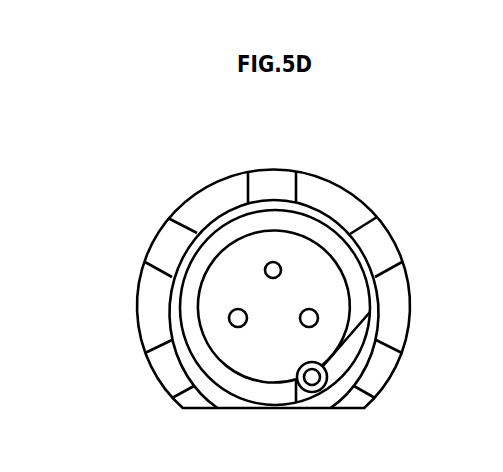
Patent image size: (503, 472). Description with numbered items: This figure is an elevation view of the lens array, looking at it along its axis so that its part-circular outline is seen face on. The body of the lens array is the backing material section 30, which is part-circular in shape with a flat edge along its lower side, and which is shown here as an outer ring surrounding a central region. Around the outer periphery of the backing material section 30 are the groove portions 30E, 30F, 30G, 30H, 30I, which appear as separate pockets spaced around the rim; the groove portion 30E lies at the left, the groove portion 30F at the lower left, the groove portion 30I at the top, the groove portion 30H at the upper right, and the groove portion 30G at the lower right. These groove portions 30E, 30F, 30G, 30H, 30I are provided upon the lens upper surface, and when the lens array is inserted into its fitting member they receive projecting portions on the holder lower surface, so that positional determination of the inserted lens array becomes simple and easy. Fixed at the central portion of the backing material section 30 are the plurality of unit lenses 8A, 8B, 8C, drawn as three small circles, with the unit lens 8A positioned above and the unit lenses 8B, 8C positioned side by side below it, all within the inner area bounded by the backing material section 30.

The backing material section 30 is at (392, 278).
The groove portion 30E is at (168, 247).
The groove portion 30F is at (173, 370).
The groove portion 30G is at (377, 374).
The groove portion 30H is at (383, 250).
The groove portion 30I is at (284, 186).
The unit lens 8A is at (270, 268).
The unit lens 8B is at (236, 318).
The unit lens 8C is at (311, 318).